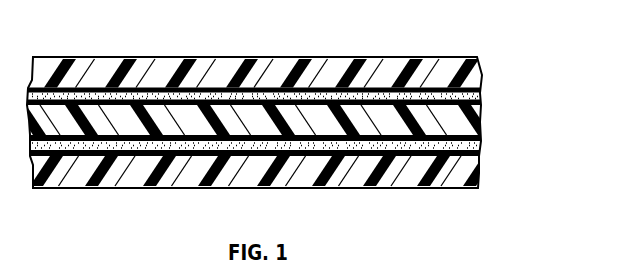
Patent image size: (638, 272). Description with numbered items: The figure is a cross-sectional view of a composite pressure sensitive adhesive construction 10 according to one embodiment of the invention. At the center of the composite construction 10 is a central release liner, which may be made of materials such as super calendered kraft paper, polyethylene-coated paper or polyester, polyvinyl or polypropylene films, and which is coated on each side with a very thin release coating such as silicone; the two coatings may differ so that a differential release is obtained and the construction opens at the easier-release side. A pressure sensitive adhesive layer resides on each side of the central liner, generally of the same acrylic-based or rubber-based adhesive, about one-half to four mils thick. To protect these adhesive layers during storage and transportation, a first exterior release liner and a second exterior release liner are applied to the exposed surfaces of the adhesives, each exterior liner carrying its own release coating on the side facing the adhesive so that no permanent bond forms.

The composite pressure sensitive adhesive construction 10 is at (494, 48).